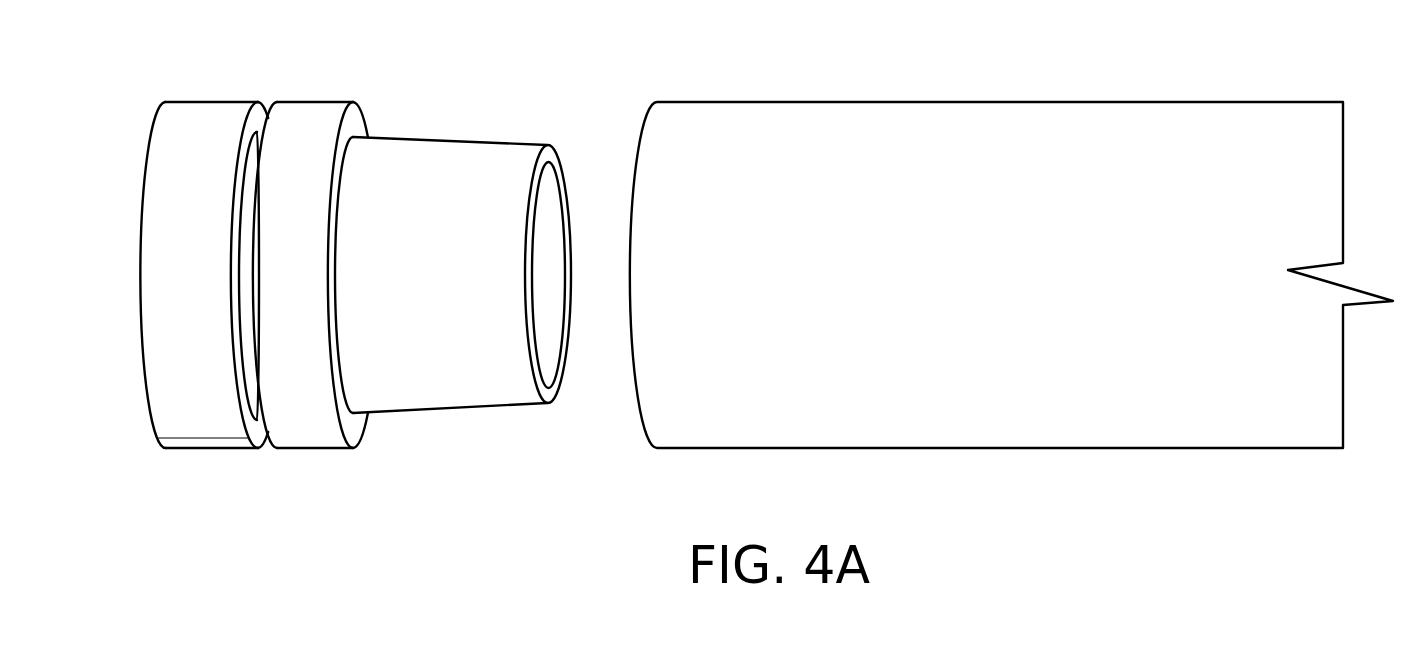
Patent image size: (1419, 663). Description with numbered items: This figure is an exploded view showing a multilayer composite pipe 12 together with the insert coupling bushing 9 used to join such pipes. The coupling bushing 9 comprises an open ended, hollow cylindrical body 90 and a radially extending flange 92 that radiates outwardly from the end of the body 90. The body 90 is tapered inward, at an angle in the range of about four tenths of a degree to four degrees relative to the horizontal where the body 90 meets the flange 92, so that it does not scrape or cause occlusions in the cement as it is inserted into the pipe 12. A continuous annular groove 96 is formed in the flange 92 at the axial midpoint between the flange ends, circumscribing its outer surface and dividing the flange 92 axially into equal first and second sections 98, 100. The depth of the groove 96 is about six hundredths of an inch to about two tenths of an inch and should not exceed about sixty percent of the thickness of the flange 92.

The coupling bushing 9 is at (355, 281).
The multilayer composite pipe 12 is at (1058, 110).
The hollow cylindrical body 90 is at (474, 142).
The radially extending flange 92 is at (161, 108).
The continuous annular groove 96 is at (257, 133).
The first section 98 is at (200, 438).
The second section 100 is at (311, 108).